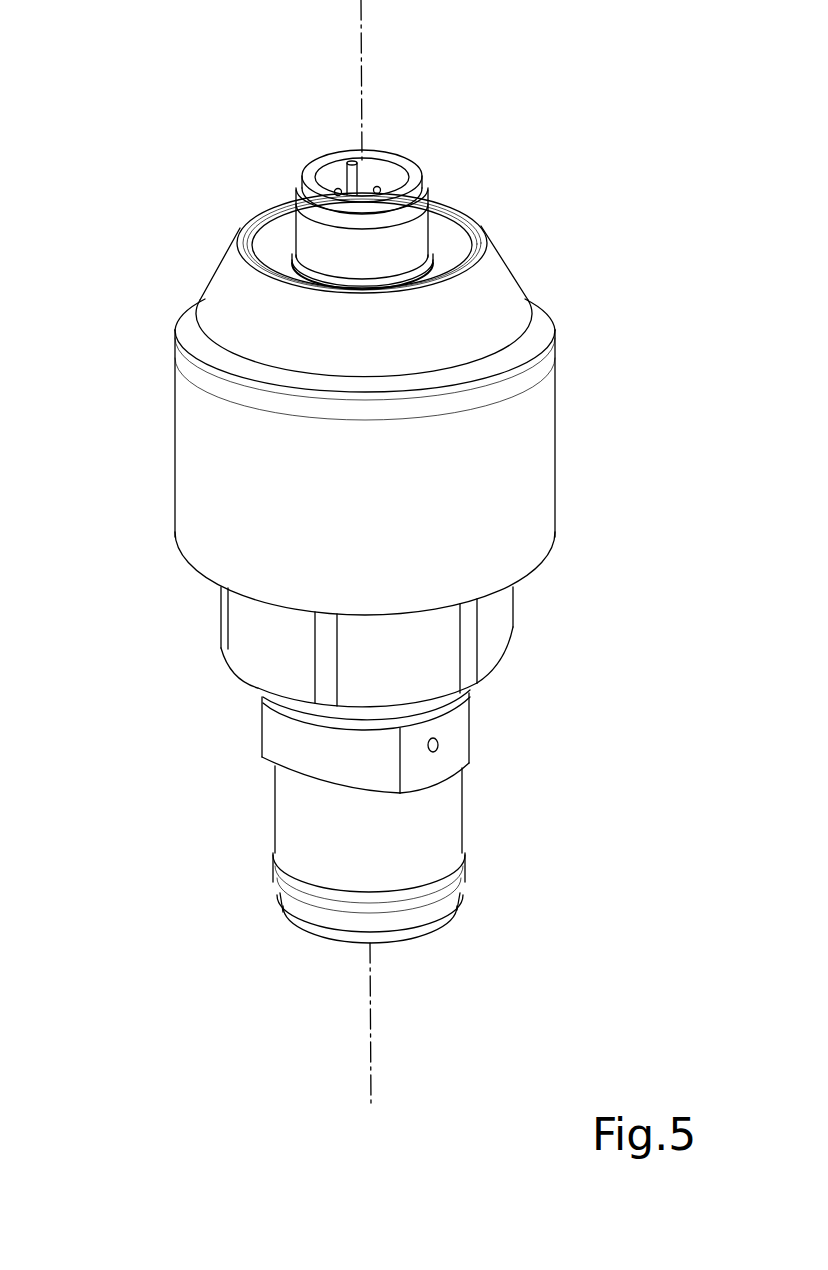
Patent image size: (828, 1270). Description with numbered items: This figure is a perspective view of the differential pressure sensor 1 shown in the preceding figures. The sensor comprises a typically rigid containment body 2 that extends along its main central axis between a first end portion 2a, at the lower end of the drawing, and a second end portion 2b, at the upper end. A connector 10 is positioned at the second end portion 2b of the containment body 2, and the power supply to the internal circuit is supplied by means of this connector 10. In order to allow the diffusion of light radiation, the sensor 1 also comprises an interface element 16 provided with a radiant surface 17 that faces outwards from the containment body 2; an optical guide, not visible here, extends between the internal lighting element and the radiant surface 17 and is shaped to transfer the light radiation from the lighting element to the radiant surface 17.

The differential pressure sensor 1 is at (607, 170).
The containment body 2 is at (221, 613).
The first end portion 2a is at (308, 930).
The second end portion 2b is at (185, 335).
The connector 10 is at (325, 160).
The interface element 16 is at (462, 203).
The radiant surface 17 is at (487, 298).